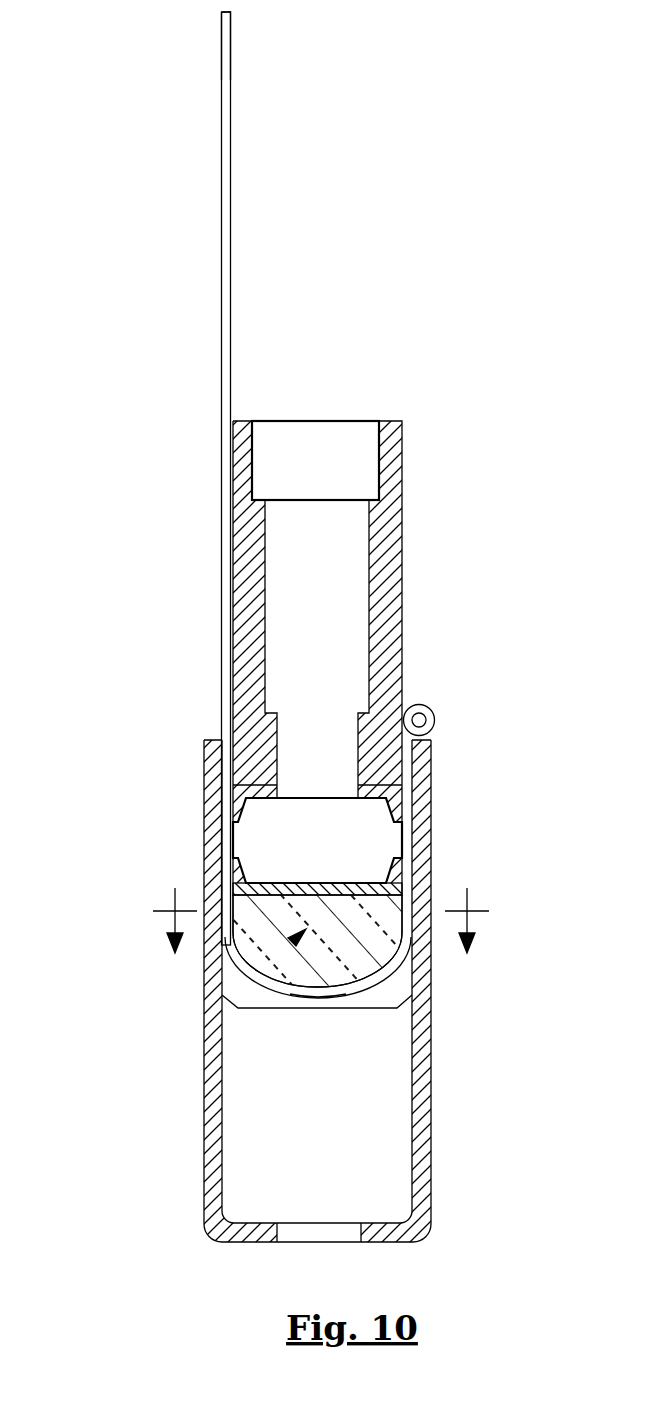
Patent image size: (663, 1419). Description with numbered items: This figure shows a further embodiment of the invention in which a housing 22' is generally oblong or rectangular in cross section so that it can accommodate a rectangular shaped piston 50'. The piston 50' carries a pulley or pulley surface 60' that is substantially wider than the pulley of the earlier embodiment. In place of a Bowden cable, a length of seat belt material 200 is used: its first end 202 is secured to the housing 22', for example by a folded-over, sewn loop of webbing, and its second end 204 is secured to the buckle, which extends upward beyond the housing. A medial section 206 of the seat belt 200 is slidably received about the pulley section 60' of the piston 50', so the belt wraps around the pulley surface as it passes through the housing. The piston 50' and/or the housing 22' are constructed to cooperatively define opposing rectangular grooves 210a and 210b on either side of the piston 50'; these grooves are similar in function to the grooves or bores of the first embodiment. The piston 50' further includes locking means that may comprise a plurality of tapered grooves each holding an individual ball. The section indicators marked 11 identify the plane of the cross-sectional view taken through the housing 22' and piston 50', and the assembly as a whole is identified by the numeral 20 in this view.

The specimen collection device 20 is at (73, 478).
The housing 22' is at (273, 991).
The piston 50' is at (220, 996).
The pulley surface 60' is at (384, 996).
The seat belt material 200 is at (219, 296).
The first end 202 is at (418, 704).
The second end 204 is at (219, 43).
The medial section 206 is at (291, 995).
The rectangular groove 210a is at (412, 890).
The rectangular groove 210b is at (295, 939).
The section line 11 is at (317, 932).